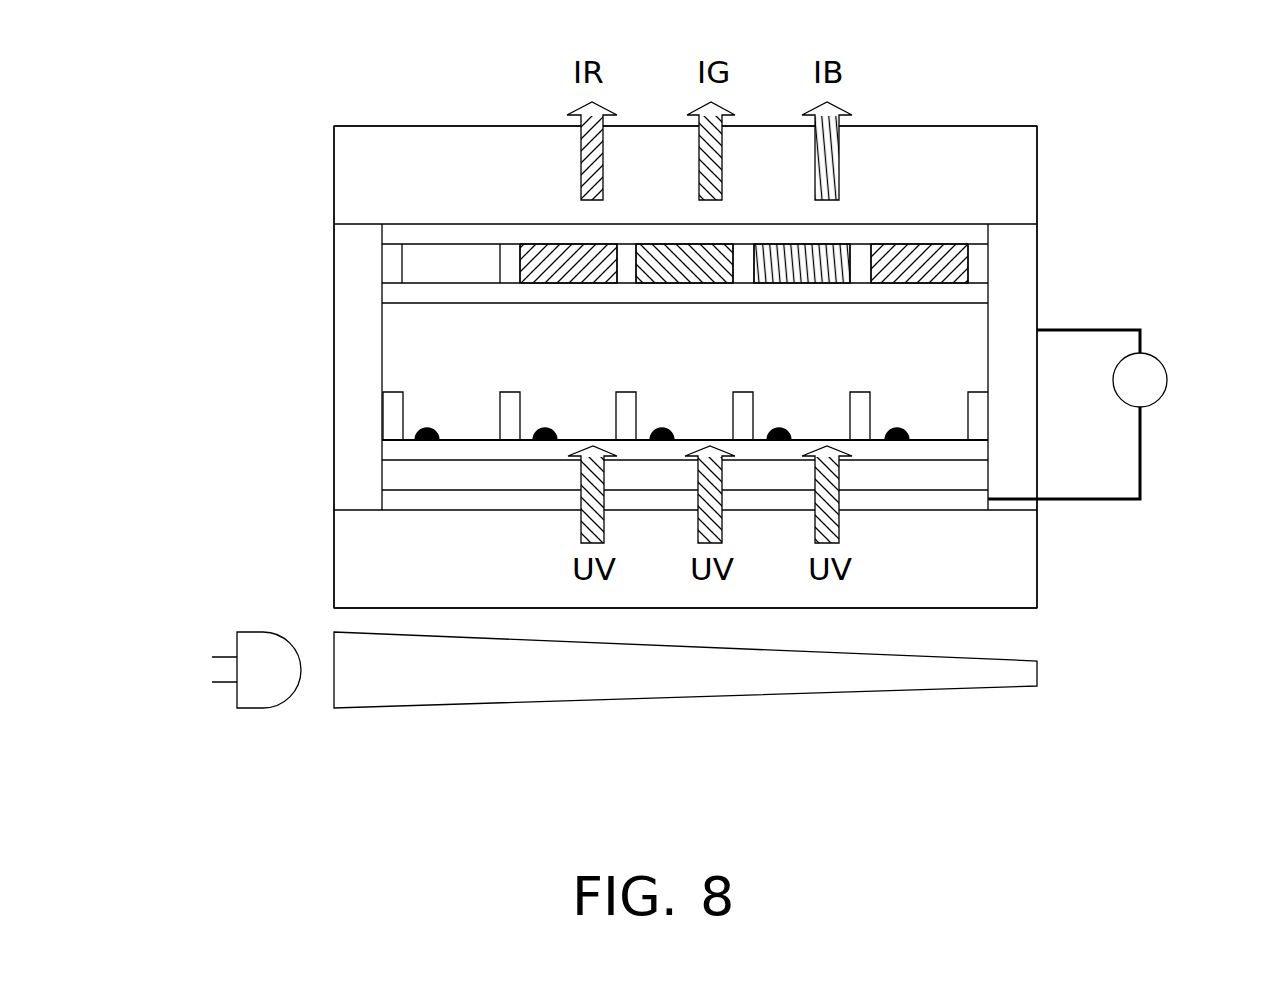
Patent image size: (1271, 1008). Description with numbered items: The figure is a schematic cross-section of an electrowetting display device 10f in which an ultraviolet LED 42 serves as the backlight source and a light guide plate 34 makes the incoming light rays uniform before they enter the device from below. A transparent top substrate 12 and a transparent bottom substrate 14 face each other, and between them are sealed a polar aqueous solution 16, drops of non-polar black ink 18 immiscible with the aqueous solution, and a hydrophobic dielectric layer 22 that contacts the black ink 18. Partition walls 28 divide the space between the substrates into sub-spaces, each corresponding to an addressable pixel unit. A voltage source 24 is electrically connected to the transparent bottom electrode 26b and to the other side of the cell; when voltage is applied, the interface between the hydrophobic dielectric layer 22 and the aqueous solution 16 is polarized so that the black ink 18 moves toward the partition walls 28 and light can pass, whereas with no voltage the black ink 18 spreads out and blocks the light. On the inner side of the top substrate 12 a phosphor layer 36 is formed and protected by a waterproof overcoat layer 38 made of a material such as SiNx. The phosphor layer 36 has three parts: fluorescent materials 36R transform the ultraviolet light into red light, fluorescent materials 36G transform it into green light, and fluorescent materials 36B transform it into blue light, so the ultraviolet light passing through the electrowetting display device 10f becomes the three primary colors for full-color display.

The electrowetting display device 10f is at (105, 93).
The top substrate 12 is at (355, 183).
The bottom substrate 14 is at (350, 555).
The aqueous solution 16 is at (408, 350).
The black ink 18 is at (546, 436).
The hydrophobic dielectric layer 22 is at (395, 449).
The voltage source 24 is at (1155, 356).
The transparent bottom electrode 26b is at (397, 502).
The partition walls 28 is at (395, 418).
The light guide plate 34 is at (530, 683).
The phosphor layer 36 is at (685, 147).
The fluorescent materials 36R is at (546, 248).
The fluorescent materials 36G is at (690, 250).
The fluorescent materials 36B is at (815, 252).
The overcoat layer 38 is at (395, 297).
The ultraviolet LED 42 is at (260, 695).